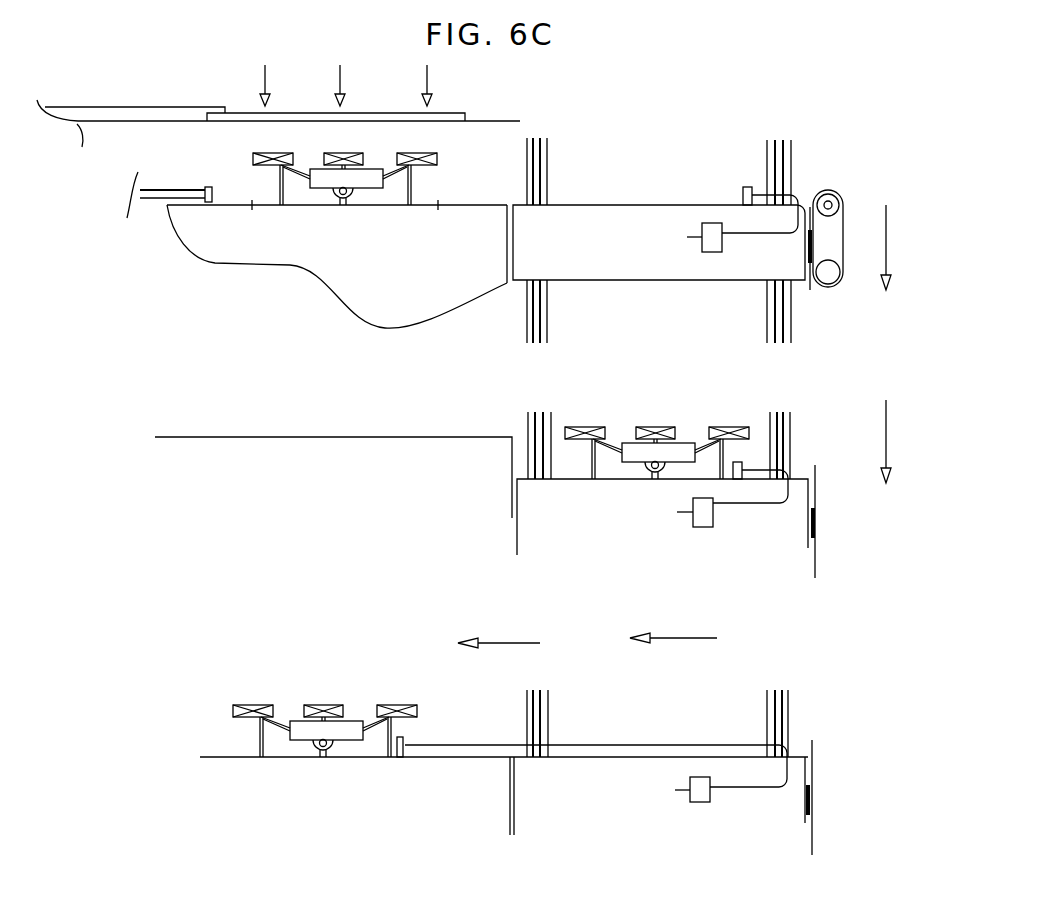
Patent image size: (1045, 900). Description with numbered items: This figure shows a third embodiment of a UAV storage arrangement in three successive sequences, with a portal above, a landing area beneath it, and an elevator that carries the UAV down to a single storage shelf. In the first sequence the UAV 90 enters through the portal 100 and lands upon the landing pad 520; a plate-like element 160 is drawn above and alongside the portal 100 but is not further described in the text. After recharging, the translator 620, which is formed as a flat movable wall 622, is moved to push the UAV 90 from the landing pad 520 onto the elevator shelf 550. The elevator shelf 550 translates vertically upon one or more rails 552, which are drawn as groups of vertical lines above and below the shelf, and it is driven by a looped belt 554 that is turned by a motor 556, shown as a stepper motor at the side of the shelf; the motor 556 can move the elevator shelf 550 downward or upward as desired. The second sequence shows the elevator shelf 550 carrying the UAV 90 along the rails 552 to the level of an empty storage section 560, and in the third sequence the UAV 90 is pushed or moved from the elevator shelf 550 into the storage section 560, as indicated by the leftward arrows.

The upper plate 160 is at (156, 85).
The portal 100 is at (230, 86).
The flat movable wall 622 is at (205, 188).
The translator 620 is at (167, 195).
The UAV 90 is at (306, 218).
The landing pad 520 is at (388, 206).
The rails 552 is at (542, 165).
The elevator shelf 550 is at (629, 256).
The looped belt 554 is at (845, 232).
The motor 556 is at (832, 273).
The storage section 560 is at (274, 496).